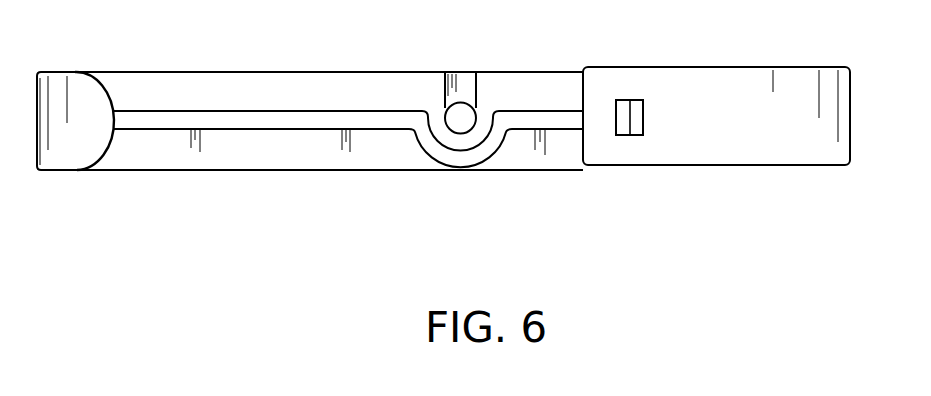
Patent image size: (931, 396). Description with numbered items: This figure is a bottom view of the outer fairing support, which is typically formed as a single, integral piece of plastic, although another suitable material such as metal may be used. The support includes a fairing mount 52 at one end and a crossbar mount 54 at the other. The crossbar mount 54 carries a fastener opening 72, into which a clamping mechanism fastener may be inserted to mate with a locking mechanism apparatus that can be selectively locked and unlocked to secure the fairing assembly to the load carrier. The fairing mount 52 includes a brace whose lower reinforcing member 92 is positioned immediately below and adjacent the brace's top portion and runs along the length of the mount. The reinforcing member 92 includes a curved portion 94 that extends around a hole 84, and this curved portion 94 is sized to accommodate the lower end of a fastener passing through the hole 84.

The fairing mount 52 is at (222, 170).
The crossbar mount 54 is at (737, 168).
The fastener opening 72 is at (640, 105).
The hole 84 is at (449, 125).
The lower reinforcing member 92 is at (258, 111).
The curved portion 94 is at (500, 147).